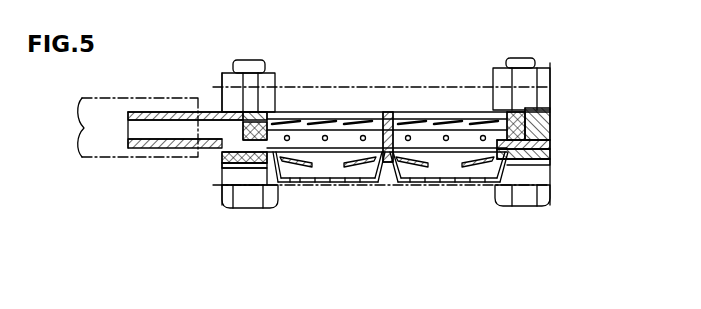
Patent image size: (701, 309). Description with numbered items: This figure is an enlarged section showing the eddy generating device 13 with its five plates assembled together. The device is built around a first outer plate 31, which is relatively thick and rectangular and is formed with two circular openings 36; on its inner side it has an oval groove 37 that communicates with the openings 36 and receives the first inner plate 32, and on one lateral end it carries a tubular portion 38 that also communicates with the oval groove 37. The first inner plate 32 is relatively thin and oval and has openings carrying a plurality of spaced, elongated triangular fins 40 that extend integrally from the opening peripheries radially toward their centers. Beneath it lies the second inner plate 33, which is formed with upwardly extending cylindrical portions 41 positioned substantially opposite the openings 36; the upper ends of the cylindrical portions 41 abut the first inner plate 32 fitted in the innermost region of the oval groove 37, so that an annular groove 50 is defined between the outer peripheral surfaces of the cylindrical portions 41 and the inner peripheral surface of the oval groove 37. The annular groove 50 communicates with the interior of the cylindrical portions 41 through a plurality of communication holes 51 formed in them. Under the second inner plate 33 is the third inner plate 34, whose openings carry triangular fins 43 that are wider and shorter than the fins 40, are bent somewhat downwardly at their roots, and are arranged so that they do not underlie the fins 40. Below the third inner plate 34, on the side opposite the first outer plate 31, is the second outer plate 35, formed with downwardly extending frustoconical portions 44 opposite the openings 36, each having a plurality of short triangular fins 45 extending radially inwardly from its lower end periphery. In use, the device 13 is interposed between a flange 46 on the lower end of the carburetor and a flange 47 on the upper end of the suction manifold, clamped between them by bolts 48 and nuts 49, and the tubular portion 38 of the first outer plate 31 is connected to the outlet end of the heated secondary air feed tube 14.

The eddy generating device 13 is at (177, 195).
The heated secondary air feed tube 14 is at (92, 160).
The first outer plate 31 is at (542, 122).
The first inner plate 32 is at (527, 112).
The second inner plate 33 is at (550, 146).
The third inner plate 34 is at (551, 155).
The second outer plate 35 is at (537, 168).
The circular openings 36 is at (355, 113).
The oval groove 37 is at (262, 123).
The tubular portion 38 is at (152, 113).
The triangular fins 40 is at (378, 122).
The cylindrical portions 41 is at (283, 148).
The triangular fins 43 is at (353, 168).
The frustoconical portions 44 is at (245, 188).
The short triangular fins 45 is at (323, 184).
The flange 46 is at (225, 100).
The flange 47 is at (222, 180).
The bolts 48 is at (232, 200).
The nuts 49 is at (224, 72).
The annular groove 50 is at (218, 160).
The communication holes 51 is at (326, 135).